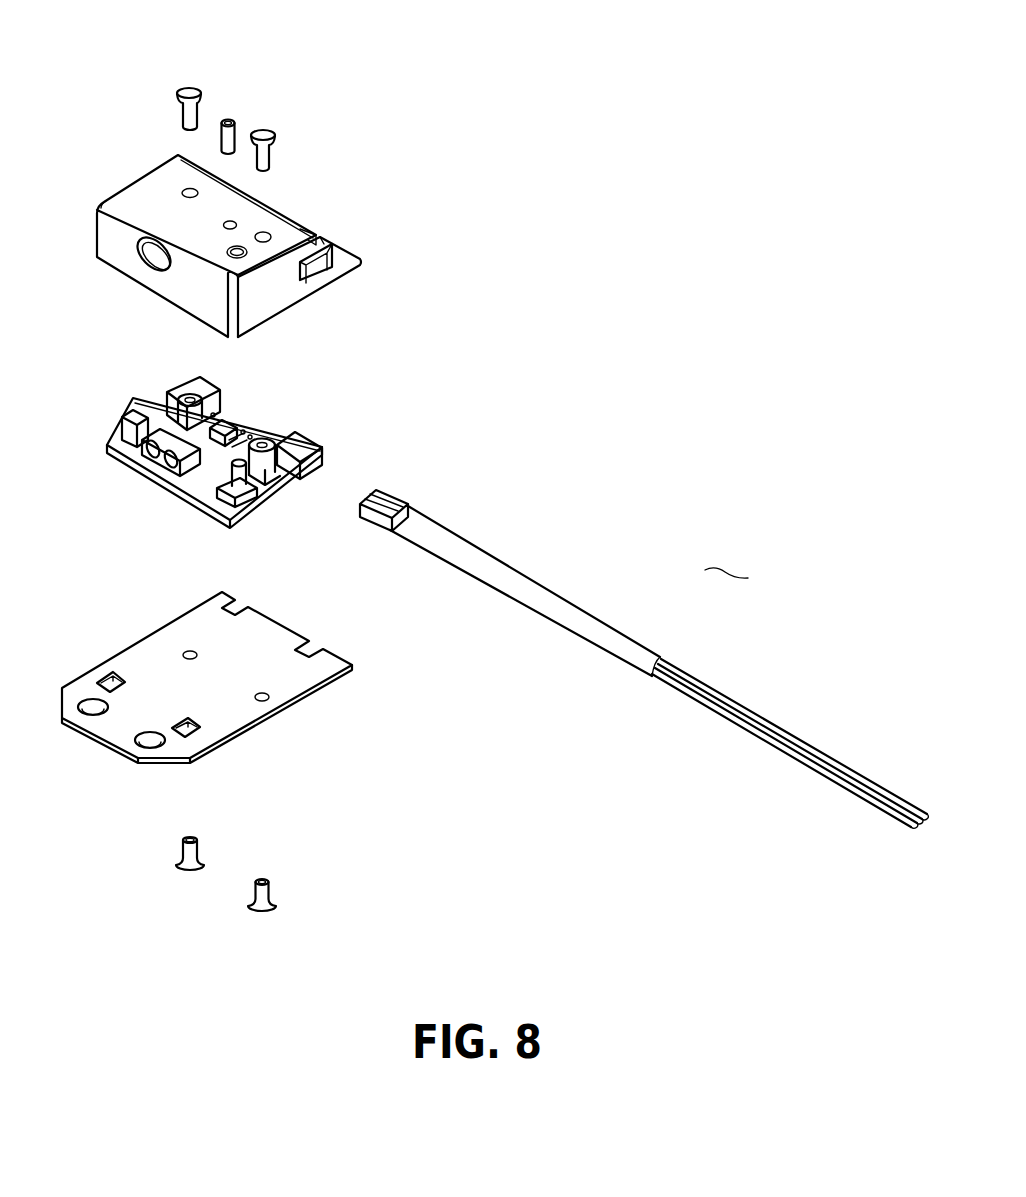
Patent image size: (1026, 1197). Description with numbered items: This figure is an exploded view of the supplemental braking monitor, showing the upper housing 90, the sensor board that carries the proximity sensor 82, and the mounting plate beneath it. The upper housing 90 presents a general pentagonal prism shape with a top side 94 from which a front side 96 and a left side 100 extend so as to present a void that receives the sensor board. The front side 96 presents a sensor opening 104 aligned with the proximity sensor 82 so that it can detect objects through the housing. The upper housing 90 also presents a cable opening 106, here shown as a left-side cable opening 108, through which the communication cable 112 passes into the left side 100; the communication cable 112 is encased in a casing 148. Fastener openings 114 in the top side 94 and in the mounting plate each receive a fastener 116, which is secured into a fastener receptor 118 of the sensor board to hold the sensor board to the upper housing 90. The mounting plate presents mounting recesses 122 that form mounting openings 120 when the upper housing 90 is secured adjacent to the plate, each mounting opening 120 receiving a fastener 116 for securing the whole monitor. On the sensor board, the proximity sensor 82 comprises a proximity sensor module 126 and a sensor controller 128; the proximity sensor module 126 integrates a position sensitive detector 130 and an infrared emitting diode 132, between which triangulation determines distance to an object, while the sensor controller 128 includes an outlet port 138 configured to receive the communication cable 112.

The proximity sensor 82 is at (201, 444).
The upper housing 90 is at (247, 403).
The top side 94 is at (130, 190).
The front side 96 is at (108, 240).
The left side 100 is at (350, 267).
The sensor opening 104 is at (147, 256).
The cable opening 106 is at (332, 256).
The left-side cable opening 108 is at (313, 278).
The communication cable 112 is at (644, 659).
The fastener opening 114 is at (180, 192).
The fastener 116 is at (209, 83).
The fastener receptor 118 is at (170, 395).
The mounting opening 120 is at (92, 712).
The mounting recess 122 is at (243, 607).
The proximity sensor module 126 is at (157, 467).
The sensor controller 128 is at (252, 409).
The position sensitive detector 130 is at (135, 457).
The infrared emitting diode 132 is at (172, 476).
The outlet port 138 is at (183, 380).
The casing 148 is at (584, 628).